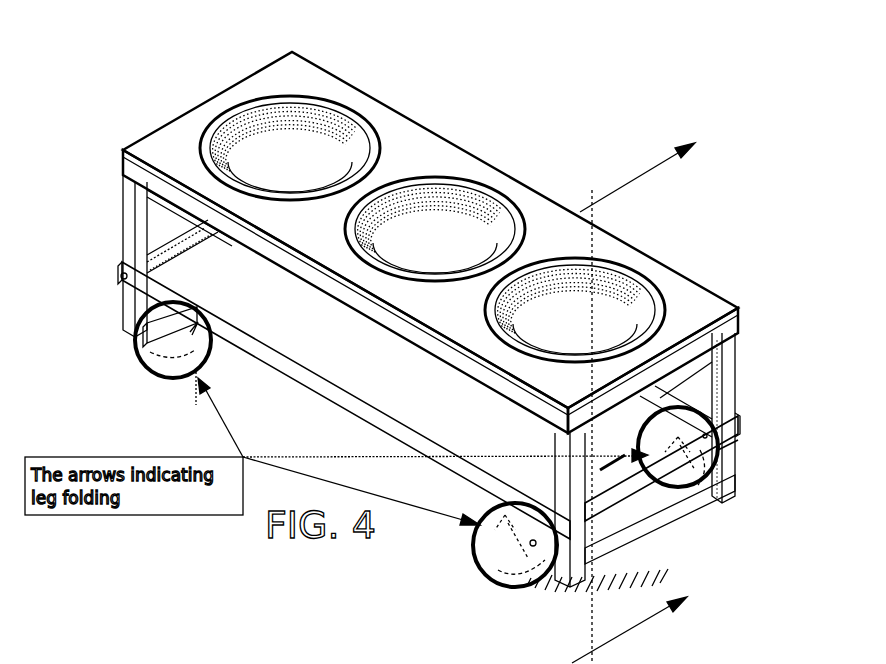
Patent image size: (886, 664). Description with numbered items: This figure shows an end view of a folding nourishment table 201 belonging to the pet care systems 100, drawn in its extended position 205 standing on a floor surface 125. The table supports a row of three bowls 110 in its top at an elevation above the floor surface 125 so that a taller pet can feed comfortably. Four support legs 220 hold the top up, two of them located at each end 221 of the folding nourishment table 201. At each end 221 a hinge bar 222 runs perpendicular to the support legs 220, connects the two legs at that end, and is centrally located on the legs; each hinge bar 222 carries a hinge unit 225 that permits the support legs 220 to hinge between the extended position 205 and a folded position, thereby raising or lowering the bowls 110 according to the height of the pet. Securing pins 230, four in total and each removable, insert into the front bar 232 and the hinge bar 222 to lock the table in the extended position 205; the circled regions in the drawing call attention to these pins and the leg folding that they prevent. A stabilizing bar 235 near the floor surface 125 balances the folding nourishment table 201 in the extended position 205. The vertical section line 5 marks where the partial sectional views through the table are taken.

The pet care systems 100 is at (160, 60).
The folding nourishment table 201 is at (145, 88).
The extended position 205 is at (135, 118).
The bowls 110 is at (352, 110).
The end 221 is at (742, 320).
The support legs 220 is at (131, 310).
The front bar 232 is at (360, 418).
The stabilizing bar 235 is at (222, 295).
The hinge unit 225 is at (167, 242).
The securing pins 230 is at (125, 272).
The hinge bars 222 is at (645, 440).
The floor surface 125 is at (635, 572).
The section 5- 5 is at (633, 403).